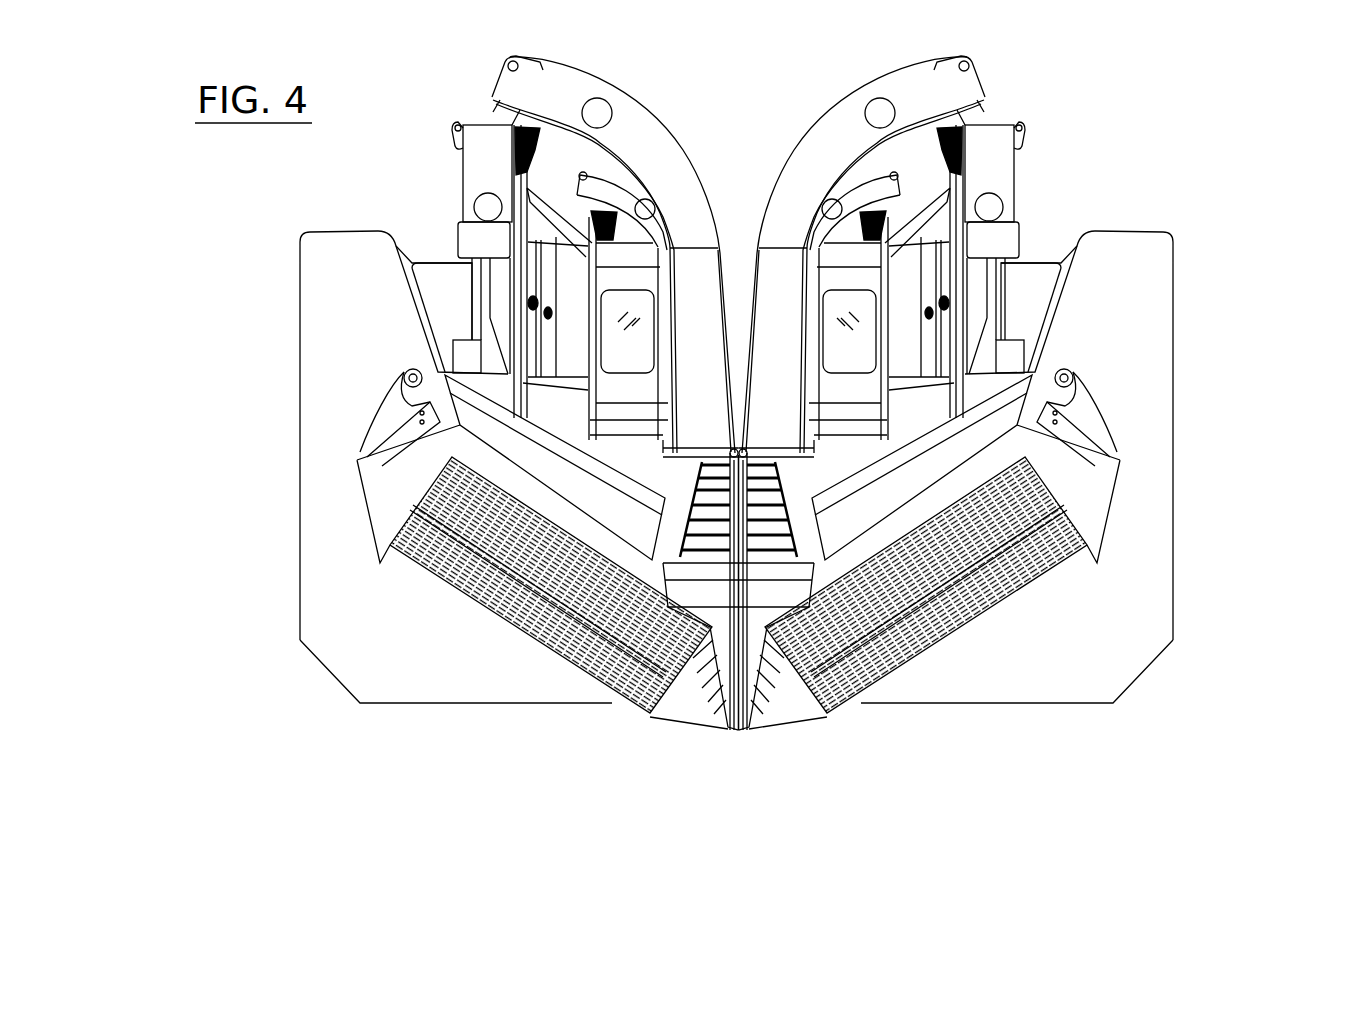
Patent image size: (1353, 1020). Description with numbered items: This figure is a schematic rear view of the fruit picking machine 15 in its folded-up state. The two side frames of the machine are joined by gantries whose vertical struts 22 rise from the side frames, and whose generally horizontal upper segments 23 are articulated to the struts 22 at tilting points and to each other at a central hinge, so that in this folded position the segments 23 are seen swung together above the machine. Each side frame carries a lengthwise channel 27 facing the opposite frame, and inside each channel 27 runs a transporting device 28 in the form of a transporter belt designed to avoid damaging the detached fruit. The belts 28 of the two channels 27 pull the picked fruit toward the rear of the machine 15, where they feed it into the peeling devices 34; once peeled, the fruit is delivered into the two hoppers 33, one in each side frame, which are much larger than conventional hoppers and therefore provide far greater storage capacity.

The machine 15 is at (551, 476).
The vertical struts 22 is at (468, 168).
The segments 23 is at (650, 137).
The channel 27 is at (713, 533).
The transporting device 28 is at (597, 693).
The hoppers 33 is at (311, 424).
The peeling devices 34 is at (507, 625).